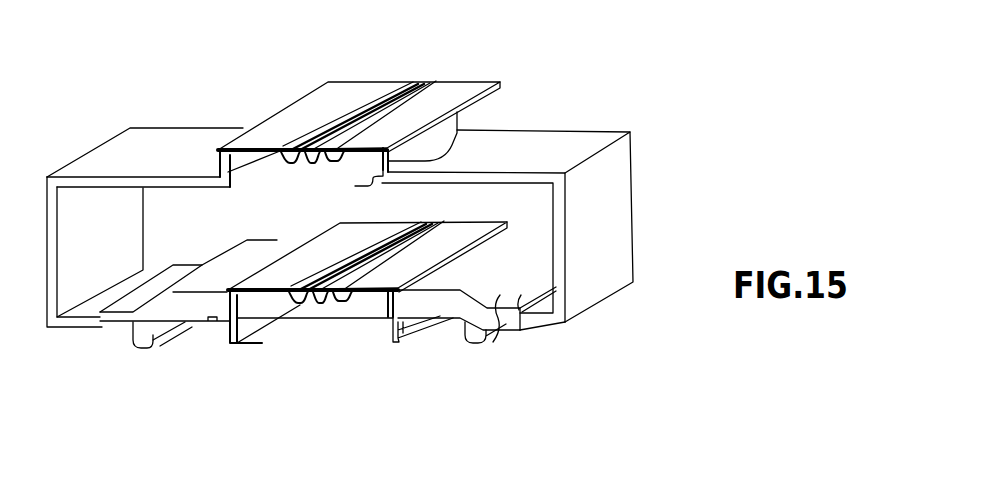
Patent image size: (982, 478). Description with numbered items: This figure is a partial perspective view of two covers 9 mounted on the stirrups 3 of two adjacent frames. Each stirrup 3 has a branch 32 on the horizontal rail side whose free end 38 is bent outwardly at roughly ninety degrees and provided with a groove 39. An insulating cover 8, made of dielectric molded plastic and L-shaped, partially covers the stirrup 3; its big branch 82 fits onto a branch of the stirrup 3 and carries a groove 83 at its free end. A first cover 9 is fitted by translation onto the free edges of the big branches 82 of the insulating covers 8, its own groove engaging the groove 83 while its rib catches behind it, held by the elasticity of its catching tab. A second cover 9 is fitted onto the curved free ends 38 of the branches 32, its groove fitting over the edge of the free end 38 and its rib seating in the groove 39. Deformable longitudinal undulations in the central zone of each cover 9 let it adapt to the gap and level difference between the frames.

The stirrup 3 is at (616, 124).
The branch 32 is at (565, 140).
The free end 38 is at (383, 172).
The cover 9 is at (375, 109).
The groove 39 is at (437, 157).
The insulating cover 8 is at (310, 310).
The groove 83 is at (393, 318).
The big branch 82 is at (486, 337).